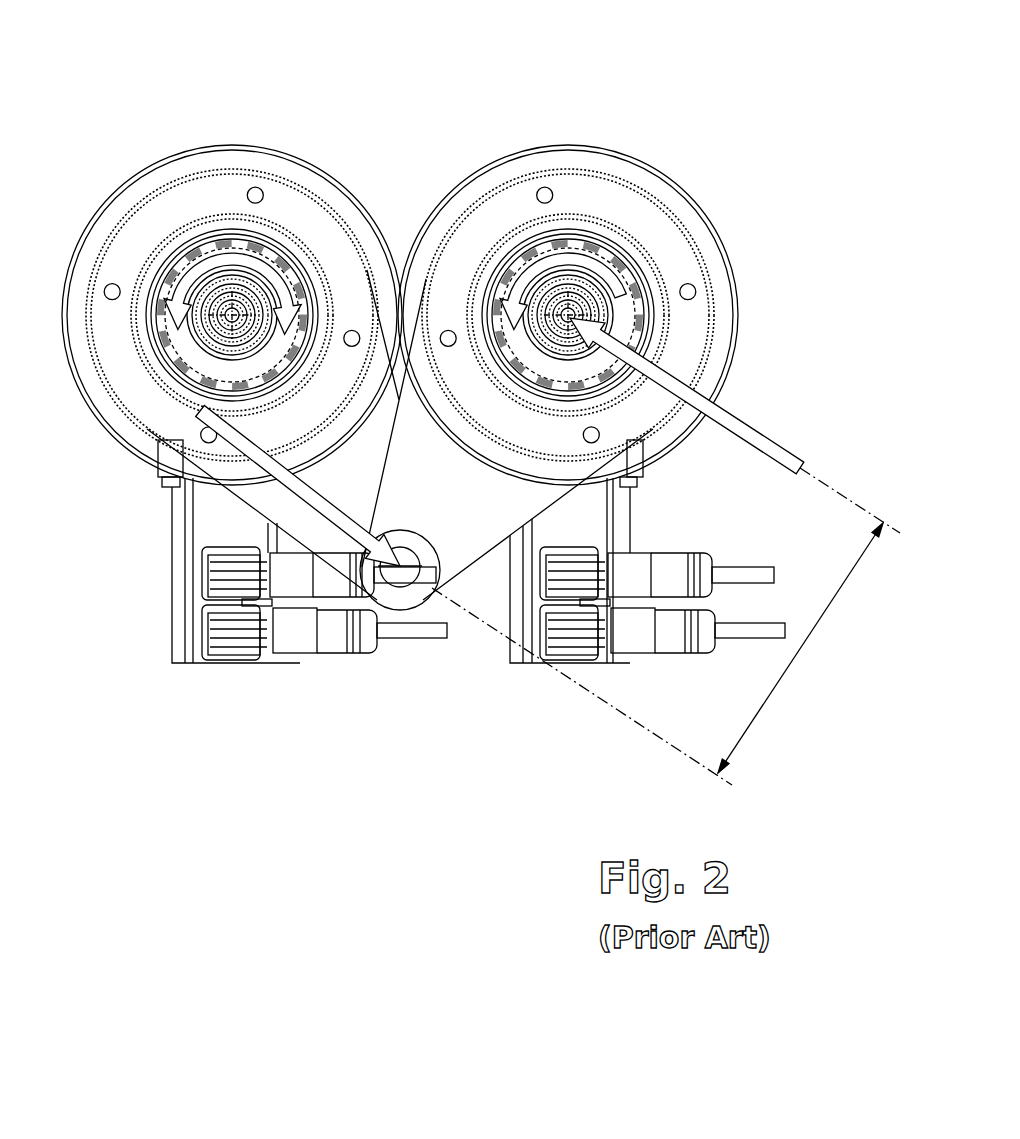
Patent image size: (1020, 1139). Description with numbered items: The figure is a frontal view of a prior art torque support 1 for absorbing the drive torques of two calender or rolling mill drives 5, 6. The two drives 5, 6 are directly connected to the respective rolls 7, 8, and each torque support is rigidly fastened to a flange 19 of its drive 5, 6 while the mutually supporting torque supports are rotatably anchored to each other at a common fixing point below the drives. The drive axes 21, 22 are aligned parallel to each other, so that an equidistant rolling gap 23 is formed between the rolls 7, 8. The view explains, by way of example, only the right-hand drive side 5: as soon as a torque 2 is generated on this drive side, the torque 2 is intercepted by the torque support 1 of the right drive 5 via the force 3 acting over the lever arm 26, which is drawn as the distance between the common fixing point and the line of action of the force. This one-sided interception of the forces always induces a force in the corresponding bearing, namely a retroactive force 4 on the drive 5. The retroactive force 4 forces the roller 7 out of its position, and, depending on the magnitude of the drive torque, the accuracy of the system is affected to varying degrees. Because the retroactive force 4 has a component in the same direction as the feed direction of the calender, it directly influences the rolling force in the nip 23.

The torque support 1 is at (425, 683).
The torque 2 is at (203, 277).
The force 3 is at (366, 506).
The retroactive force 4 is at (750, 434).
The drive 5 is at (643, 100).
The drive 6 is at (155, 100).
The roll 7 is at (517, 152).
The roll 8 is at (282, 153).
The flange 19 is at (300, 188).
The drive axis 21 is at (553, 280).
The drive axis 22 is at (232, 314).
The rolling gap 23 is at (400, 250).
The lever arm 26 is at (803, 651).